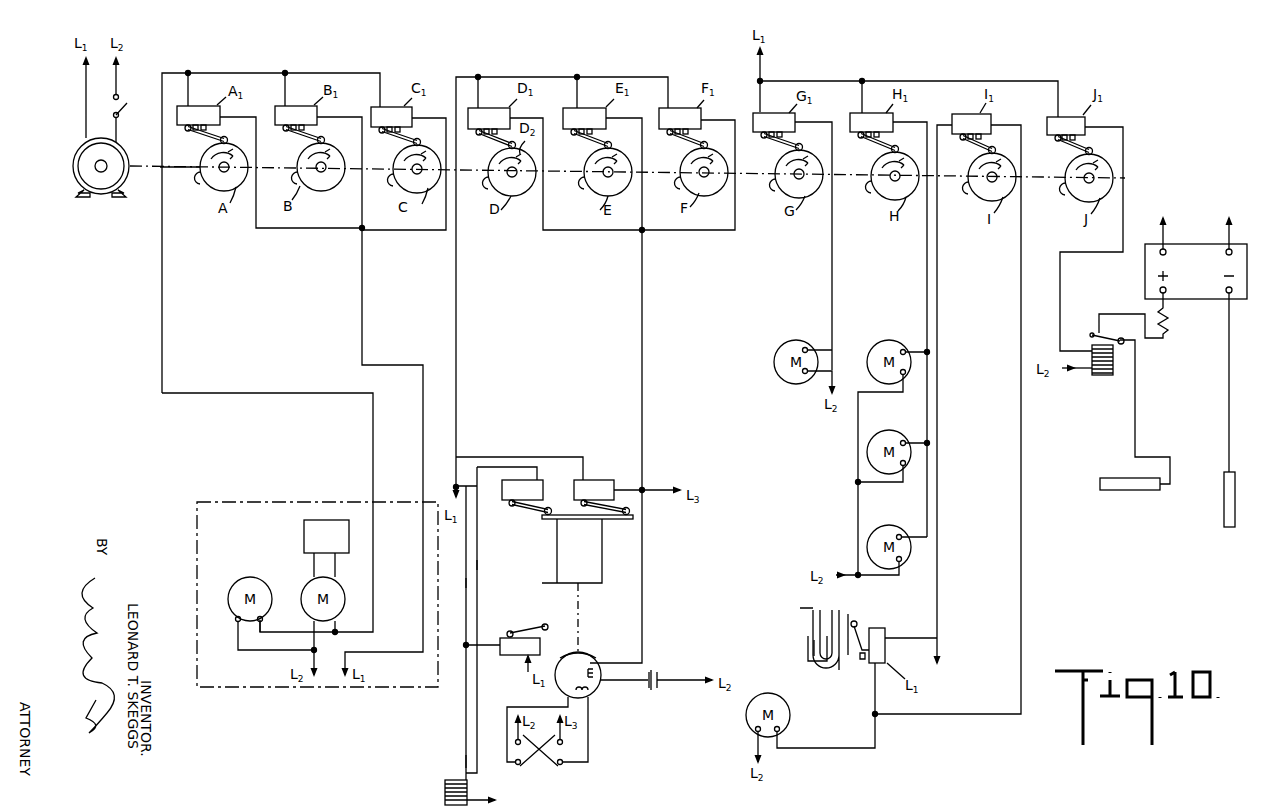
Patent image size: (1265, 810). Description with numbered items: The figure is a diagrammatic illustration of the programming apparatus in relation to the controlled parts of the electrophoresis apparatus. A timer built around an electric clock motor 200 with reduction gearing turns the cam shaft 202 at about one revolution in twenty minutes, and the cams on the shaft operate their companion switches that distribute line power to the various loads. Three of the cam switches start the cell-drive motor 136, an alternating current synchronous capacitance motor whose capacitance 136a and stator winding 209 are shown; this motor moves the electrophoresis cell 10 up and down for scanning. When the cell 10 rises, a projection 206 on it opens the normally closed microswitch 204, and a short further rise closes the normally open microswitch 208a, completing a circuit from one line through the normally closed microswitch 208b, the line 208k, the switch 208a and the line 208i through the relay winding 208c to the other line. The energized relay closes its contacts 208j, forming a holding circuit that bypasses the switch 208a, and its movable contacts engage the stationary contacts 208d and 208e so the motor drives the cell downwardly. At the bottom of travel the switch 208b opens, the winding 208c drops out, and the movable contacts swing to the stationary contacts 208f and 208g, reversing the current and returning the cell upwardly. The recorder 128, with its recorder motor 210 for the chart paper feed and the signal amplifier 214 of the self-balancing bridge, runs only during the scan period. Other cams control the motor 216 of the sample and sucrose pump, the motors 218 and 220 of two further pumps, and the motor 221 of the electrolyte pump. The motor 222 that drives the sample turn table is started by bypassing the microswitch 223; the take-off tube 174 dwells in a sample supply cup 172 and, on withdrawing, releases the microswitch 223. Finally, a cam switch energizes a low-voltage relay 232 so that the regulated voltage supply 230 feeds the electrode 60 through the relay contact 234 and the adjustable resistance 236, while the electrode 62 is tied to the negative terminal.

The electric clock motor 200 is at (76, 181).
The cam shaft 202 is at (188, 170).
The recorder 128 is at (333, 692).
The recorder motor 210 is at (250, 578).
The signal amplifier 214 is at (303, 527).
The microswitch 204 is at (598, 479).
The projection 206 is at (619, 521).
The electrophoresis cell 10 is at (587, 559).
The microswitch 208a is at (512, 480).
The microswitch 208b is at (500, 656).
The relay winding 208c is at (445, 793).
The stationary contact 208d is at (515, 766).
The stationary contact 208e is at (563, 766).
The stationary contact 208f is at (515, 742).
The stationary contact 208g is at (563, 742).
The line 208i is at (477, 566).
The relay contacts 208j is at (460, 762).
The line 208k is at (468, 586).
The stator winding 209 is at (581, 662).
The cell-drive motor 136 is at (594, 660).
The capacitance 136a is at (660, 674).
The motor 216 is at (775, 359).
The motor 218 is at (890, 344).
The motor 220 is at (889, 434).
The motor 221 is at (889, 529).
The motor 222 is at (790, 715).
The microswitch 223 is at (889, 631).
The sample supply cup 172 is at (808, 654).
The take-off tube 174 is at (812, 609).
The regulated voltage supply 230 is at (1198, 240).
The relay 232 is at (1100, 378).
The relay contact 234 is at (1091, 331).
The adjustable resistance 236 is at (1170, 320).
The electrode 60 is at (1117, 492).
The electrode 62 is at (1224, 519).